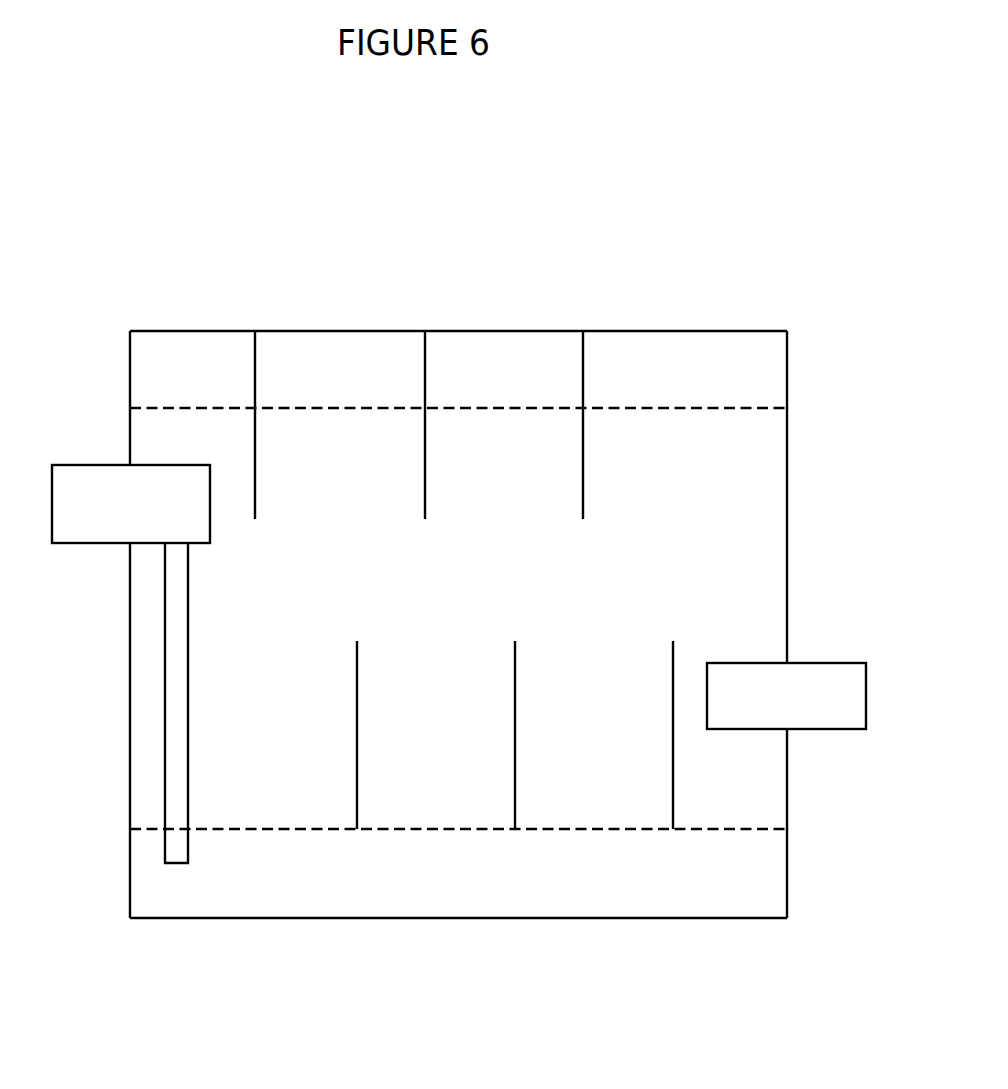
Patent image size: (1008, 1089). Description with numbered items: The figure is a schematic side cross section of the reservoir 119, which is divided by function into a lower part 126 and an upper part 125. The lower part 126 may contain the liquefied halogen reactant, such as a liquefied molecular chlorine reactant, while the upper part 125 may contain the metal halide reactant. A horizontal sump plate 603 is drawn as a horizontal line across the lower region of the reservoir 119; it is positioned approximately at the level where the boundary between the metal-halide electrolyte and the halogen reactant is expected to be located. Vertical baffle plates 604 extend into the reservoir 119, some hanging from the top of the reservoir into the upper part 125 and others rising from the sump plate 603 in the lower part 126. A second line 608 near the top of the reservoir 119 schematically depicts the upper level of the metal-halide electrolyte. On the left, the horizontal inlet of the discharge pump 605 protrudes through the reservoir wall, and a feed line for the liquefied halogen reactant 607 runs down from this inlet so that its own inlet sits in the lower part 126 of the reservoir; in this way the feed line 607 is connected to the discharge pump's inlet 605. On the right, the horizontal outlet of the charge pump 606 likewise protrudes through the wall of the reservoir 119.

The reservoir 119 is at (490, 1017).
The upper part 125 is at (740, 485).
The lower part 126 is at (538, 894).
The horizontal sump plate 603 is at (470, 829).
The vertical baffle plates 604 is at (256, 451).
The horizontal inlet of the discharge pump 605 is at (131, 504).
The horizontal outlet of the charge pump 606 is at (820, 729).
The feed line for the liquefied halogen reactant 607 is at (189, 733).
The upper level of the metal-halide electrolyte 608 is at (533, 407).